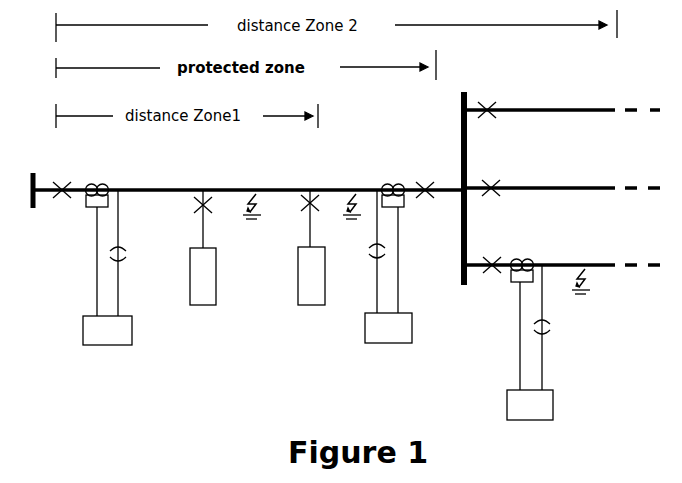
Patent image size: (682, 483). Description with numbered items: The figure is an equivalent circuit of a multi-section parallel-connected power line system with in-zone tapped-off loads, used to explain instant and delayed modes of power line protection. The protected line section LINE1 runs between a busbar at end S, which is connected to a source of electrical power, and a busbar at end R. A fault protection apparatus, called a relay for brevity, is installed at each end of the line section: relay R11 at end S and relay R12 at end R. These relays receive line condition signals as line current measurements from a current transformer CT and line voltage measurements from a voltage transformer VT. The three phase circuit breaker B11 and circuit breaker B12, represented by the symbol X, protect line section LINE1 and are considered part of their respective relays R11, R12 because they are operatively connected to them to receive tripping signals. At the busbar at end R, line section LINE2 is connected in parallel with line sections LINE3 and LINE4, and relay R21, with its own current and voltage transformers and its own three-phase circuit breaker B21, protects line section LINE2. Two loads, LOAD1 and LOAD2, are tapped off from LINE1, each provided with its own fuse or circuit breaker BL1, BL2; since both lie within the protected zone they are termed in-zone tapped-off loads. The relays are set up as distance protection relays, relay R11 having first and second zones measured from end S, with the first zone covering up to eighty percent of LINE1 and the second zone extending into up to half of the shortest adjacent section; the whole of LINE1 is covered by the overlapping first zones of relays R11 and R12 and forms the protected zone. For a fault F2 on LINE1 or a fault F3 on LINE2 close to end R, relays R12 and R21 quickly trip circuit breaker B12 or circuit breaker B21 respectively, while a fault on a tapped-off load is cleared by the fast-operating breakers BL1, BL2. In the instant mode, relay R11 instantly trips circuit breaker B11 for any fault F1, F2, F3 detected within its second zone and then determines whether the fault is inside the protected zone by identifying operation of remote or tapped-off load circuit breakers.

The end S is at (34, 218).
The end R is at (466, 212).
The protected line section LINE1 is at (248, 172).
The line section LINE2 is at (562, 254).
The line section LINE3 is at (562, 181).
The line section LINE4 is at (562, 104).
The three phase circuit breaker B11 is at (58, 176).
The three phase circuit breaker B12 is at (431, 177).
The three-phase circuit breaker B21 is at (487, 254).
The fuse or circuit breaker BL1 is at (188, 219).
The fuse or circuit breaker BL2 is at (297, 218).
The current transformer CT is at (100, 180).
The voltage transformer VT is at (128, 253).
The relay R11 is at (107, 289).
The relay R12 is at (388, 278).
The relay R21 is at (530, 353).
The in-zone tapped-off load LOAD1 is at (203, 277).
The in-zone tapped-off load LOAD2 is at (311, 276).
The fault F1 is at (252, 223).
The fault F2 is at (348, 219).
The fault F3 is at (581, 296).